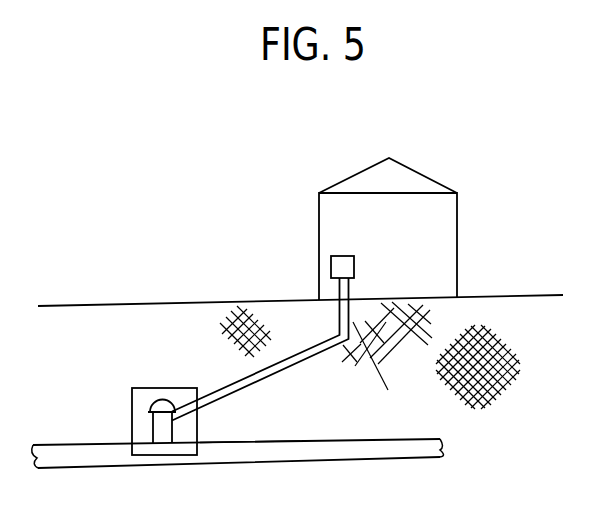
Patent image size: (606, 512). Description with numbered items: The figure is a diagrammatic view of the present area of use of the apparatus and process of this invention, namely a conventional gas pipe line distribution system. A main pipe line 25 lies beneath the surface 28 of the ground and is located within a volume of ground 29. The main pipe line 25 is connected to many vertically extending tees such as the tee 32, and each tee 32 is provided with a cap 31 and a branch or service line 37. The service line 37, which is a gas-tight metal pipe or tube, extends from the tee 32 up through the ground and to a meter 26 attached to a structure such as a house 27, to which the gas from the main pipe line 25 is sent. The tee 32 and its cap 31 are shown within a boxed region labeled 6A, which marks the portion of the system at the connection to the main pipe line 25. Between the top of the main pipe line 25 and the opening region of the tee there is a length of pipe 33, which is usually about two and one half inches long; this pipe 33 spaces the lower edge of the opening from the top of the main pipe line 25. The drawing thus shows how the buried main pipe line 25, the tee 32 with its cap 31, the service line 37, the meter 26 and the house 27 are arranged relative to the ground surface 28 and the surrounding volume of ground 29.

The valve assembly / injection unit 6A is at (128, 387).
The main pipe line 25 is at (378, 453).
The meter 26 is at (331, 268).
The house 27 is at (460, 262).
The surface of the ground 28 is at (98, 305).
The volume of ground 29 is at (421, 379).
The cap 31 is at (166, 401).
The tee 32 is at (143, 429).
The pipe 33 is at (228, 448).
The service line 37 is at (244, 342).